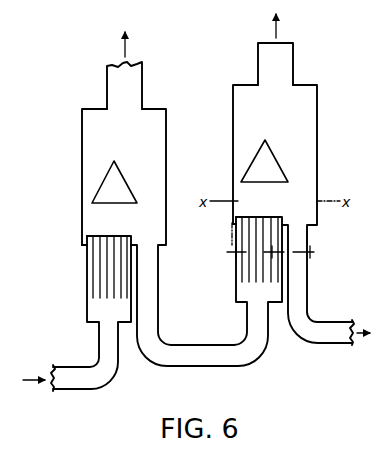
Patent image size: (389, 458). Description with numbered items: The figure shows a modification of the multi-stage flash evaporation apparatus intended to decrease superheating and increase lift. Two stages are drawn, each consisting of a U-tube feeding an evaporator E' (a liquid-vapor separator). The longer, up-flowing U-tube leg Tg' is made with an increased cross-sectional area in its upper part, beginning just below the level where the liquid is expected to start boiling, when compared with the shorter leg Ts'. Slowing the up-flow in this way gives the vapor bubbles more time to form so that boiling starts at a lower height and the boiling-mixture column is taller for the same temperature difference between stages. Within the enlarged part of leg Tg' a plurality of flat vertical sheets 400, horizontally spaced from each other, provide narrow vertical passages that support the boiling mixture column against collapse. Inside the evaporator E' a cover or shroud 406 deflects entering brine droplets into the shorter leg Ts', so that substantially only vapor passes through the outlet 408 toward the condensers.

The flat vertical sheets 400 is at (257, 221).
The cover or shroud 406 is at (282, 133).
The outlet 408 is at (292, 70).
The evaporator E' is at (301, 179).
The longer U-tube leg Tg' is at (220, 279).
The shorter U-tube leg Ts' is at (323, 281).